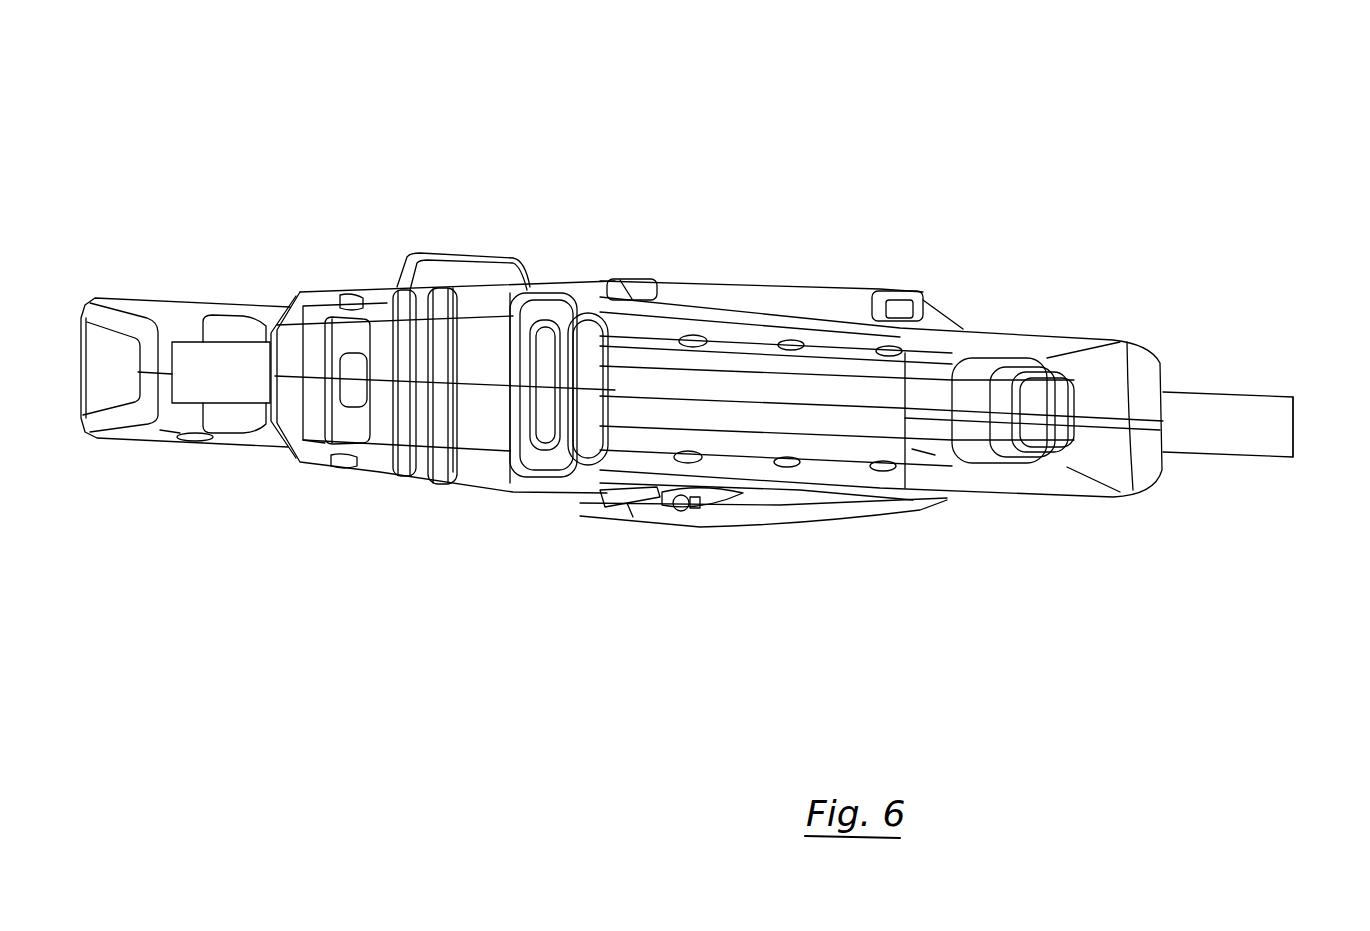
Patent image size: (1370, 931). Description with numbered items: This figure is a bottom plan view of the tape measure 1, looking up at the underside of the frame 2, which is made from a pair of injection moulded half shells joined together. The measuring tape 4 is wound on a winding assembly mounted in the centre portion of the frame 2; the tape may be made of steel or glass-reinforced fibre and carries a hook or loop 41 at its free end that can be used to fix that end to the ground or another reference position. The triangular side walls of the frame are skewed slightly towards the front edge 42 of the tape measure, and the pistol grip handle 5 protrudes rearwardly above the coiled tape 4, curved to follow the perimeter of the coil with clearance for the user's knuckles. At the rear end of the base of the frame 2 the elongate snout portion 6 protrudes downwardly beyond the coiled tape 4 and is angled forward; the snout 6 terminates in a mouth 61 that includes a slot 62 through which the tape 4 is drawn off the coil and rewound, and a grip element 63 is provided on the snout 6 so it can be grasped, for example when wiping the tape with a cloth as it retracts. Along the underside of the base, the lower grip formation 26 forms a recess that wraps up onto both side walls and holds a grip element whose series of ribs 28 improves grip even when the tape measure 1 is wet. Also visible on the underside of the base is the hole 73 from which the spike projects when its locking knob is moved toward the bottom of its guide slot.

The tape measure 1 is at (944, 109).
The frame 2 is at (1041, 318).
The measuring tape 4 is at (232, 365).
The pistol grip handle 5 is at (146, 290).
The snout portion 6 is at (485, 440).
The lower grip formation 26 is at (912, 449).
The ribs 28 is at (883, 347).
The hook or loop 41 is at (565, 452).
The front edge 42 is at (1300, 410).
The mouth 61 is at (512, 472).
The slot 62 is at (540, 455).
The grip element 63 is at (413, 453).
The hole 73 is at (333, 422).